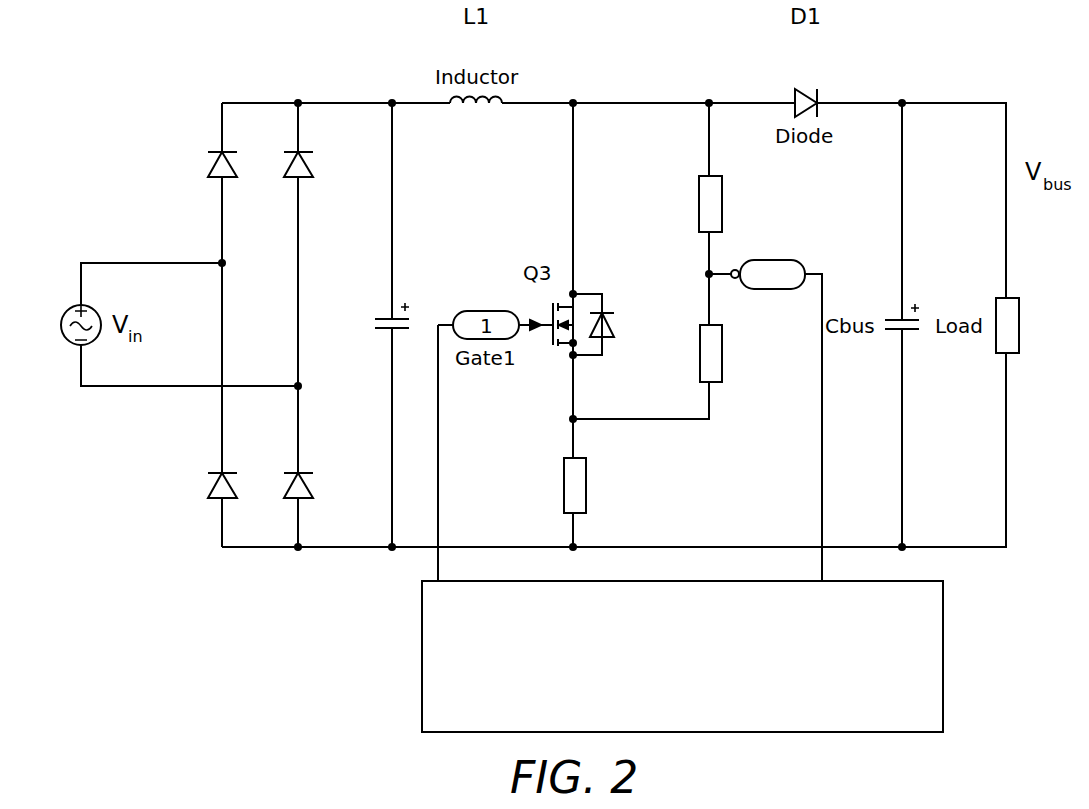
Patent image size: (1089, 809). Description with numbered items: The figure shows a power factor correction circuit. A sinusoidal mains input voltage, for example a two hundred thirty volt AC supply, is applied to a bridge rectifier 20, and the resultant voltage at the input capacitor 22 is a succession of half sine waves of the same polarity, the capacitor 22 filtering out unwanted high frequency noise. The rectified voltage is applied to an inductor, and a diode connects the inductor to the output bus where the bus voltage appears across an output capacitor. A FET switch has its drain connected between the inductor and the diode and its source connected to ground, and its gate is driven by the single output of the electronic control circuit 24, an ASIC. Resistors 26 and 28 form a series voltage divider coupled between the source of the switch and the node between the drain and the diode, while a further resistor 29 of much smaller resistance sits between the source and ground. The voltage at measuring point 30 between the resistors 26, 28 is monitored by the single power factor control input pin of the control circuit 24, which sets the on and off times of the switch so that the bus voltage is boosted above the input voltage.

The bridge rectifier 20 is at (253, 266).
The input capacitor 22 is at (409, 273).
The electronic control circuit 24 is at (422, 653).
The resistor 26 is at (723, 203).
The resistor 28 is at (723, 350).
The further resistor 29 is at (587, 486).
The measuring point 30 is at (697, 274).